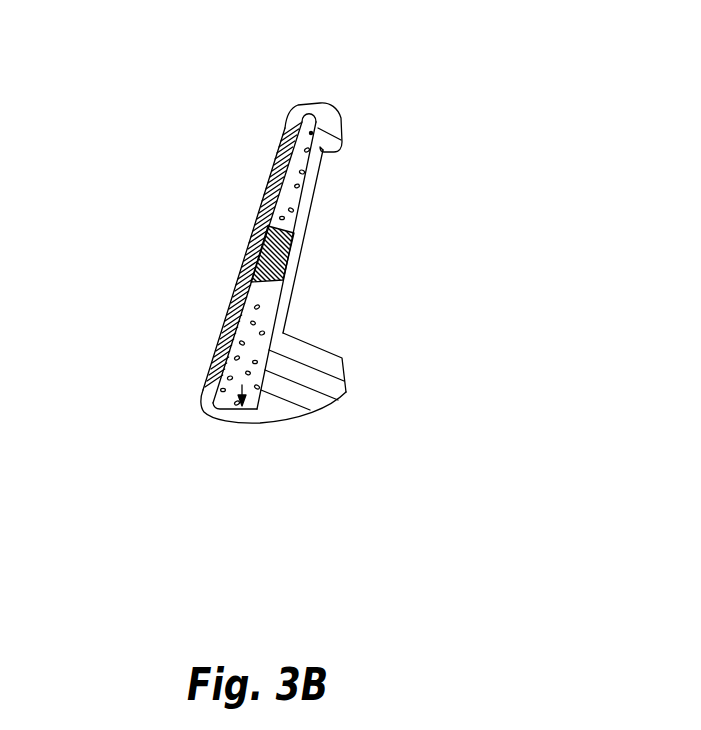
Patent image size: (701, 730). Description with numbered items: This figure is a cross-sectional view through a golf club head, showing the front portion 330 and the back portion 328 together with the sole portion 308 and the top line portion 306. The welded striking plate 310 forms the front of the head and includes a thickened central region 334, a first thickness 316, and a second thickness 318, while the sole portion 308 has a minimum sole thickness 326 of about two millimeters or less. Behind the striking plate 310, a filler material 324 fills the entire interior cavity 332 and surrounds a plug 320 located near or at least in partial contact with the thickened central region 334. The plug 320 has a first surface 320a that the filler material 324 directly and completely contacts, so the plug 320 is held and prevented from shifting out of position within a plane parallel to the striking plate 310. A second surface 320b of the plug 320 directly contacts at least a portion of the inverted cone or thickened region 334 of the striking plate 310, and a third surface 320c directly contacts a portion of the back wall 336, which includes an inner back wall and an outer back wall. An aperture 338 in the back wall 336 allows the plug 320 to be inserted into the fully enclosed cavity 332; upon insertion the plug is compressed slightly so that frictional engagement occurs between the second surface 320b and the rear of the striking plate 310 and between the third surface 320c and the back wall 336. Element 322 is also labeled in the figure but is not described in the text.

The top line portion 306 is at (309, 80).
The sole portion 308 is at (182, 488).
The welded striking plate 310 is at (262, 190).
The first thickness 316 is at (265, 150).
The second thickness 318 is at (230, 254).
The plug 320 is at (290, 243).
The first surface 320a is at (313, 167).
The second surface 320b is at (262, 228).
The third surface 320c is at (283, 271).
The inner wall 322 is at (302, 304).
The filler material 324 is at (208, 362).
The minimum sole thickness 326 is at (238, 447).
The back portion 328 is at (450, 144).
The front portion 330 is at (137, 138).
The interior cavity 332 is at (200, 415).
The thickened central region 334 is at (262, 291).
The back wall 336 is at (286, 320).
The aperture 338 is at (315, 256).